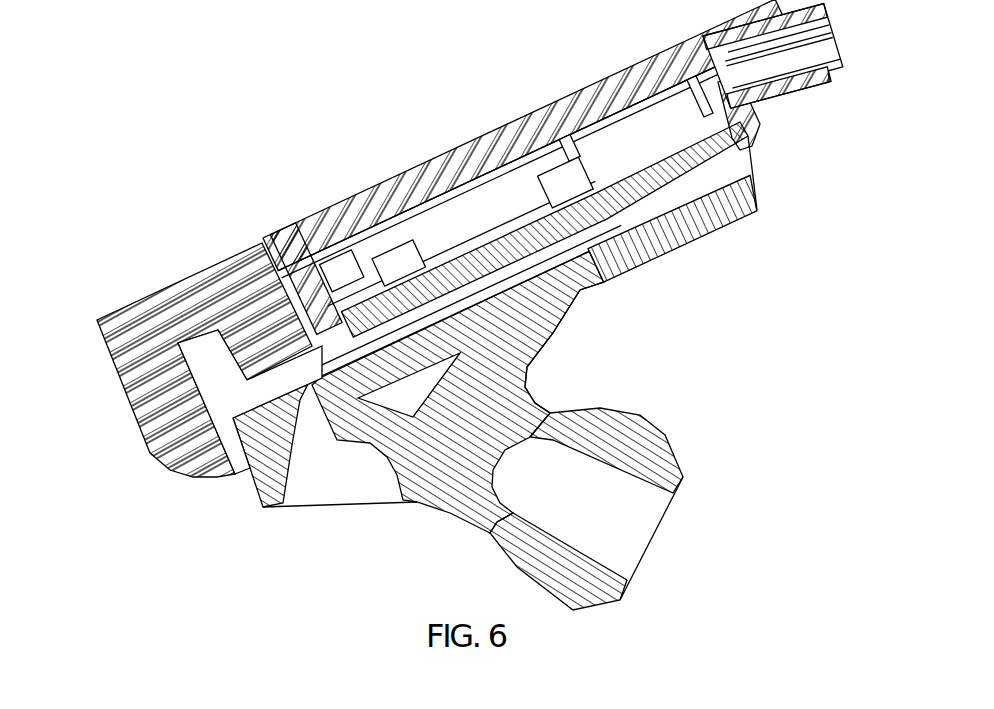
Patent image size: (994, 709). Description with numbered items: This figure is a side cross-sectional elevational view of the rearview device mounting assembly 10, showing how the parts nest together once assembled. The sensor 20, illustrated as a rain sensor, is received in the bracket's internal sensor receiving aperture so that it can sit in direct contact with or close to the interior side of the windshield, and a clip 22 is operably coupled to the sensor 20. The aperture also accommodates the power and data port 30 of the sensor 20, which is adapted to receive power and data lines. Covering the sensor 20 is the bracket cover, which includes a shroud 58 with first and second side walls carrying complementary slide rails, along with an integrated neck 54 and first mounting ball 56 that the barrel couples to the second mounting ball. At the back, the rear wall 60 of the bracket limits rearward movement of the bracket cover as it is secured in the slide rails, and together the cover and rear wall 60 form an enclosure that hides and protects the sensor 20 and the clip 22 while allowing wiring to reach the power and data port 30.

The rearview device mounting assembly 10 is at (481, 305).
The sensor 20 is at (492, 143).
The clip 22 is at (603, 277).
The power and data port 30 is at (845, 73).
The neck 54 is at (533, 403).
The first mounting ball 56 is at (660, 447).
The shroud 58 is at (708, 235).
The rear wall 60 is at (148, 393).